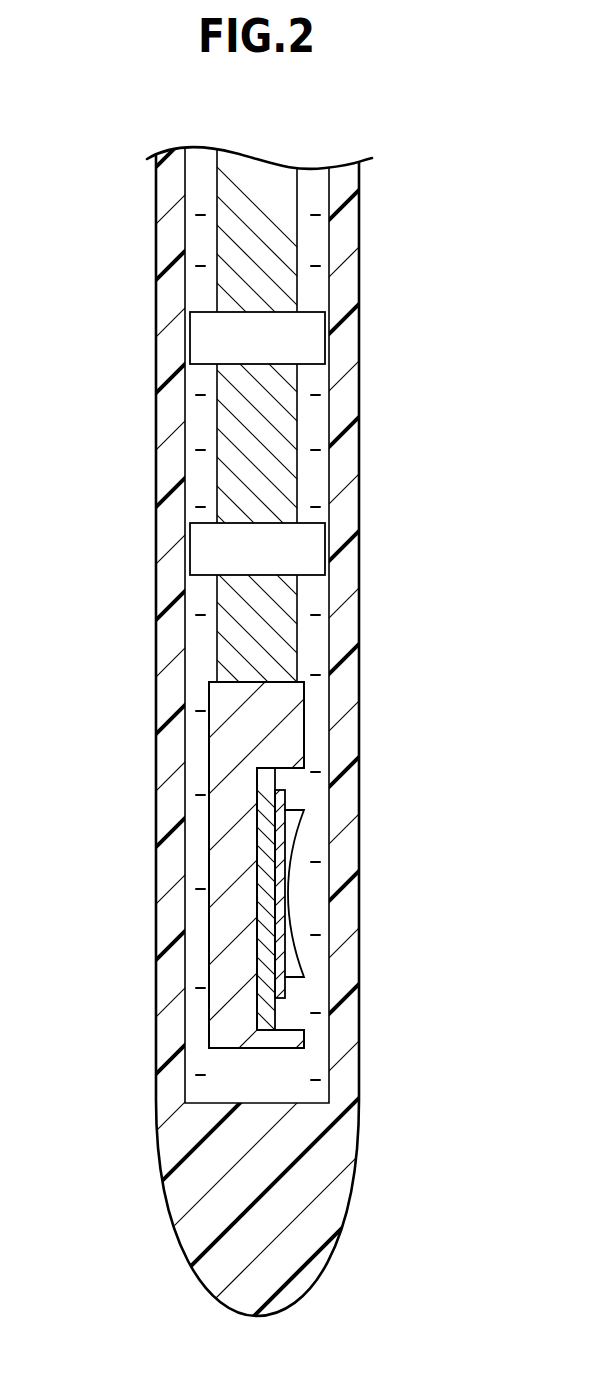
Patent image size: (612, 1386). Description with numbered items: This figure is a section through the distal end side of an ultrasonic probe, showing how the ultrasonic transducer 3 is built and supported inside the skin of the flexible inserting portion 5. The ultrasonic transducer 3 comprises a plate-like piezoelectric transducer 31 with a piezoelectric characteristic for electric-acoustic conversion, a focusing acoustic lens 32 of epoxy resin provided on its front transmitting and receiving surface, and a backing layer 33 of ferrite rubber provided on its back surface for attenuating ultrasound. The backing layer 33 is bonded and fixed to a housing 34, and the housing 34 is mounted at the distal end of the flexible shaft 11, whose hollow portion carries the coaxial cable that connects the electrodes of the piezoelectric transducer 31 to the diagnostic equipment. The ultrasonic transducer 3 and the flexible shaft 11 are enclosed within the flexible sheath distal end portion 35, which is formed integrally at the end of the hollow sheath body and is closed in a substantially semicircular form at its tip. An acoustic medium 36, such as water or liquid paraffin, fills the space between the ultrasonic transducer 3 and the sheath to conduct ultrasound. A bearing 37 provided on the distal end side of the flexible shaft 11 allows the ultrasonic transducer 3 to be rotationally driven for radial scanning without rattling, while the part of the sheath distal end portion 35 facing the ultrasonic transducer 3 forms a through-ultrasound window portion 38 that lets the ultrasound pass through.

The inserting portion 5 is at (370, 222).
The flexible shaft 11 is at (282, 440).
The ultrasonic transducer 3 is at (287, 908).
The piezoelectric transducer 31 is at (280, 949).
The acoustic lens 32 is at (292, 968).
The backing layer 33 is at (265, 1014).
The housing 34 is at (232, 863).
The sheath distal end portion 35 is at (168, 657).
The acoustic medium 36 is at (202, 615).
The bearing 37 is at (205, 342).
The through-ultrasound window portion 38 is at (347, 950).